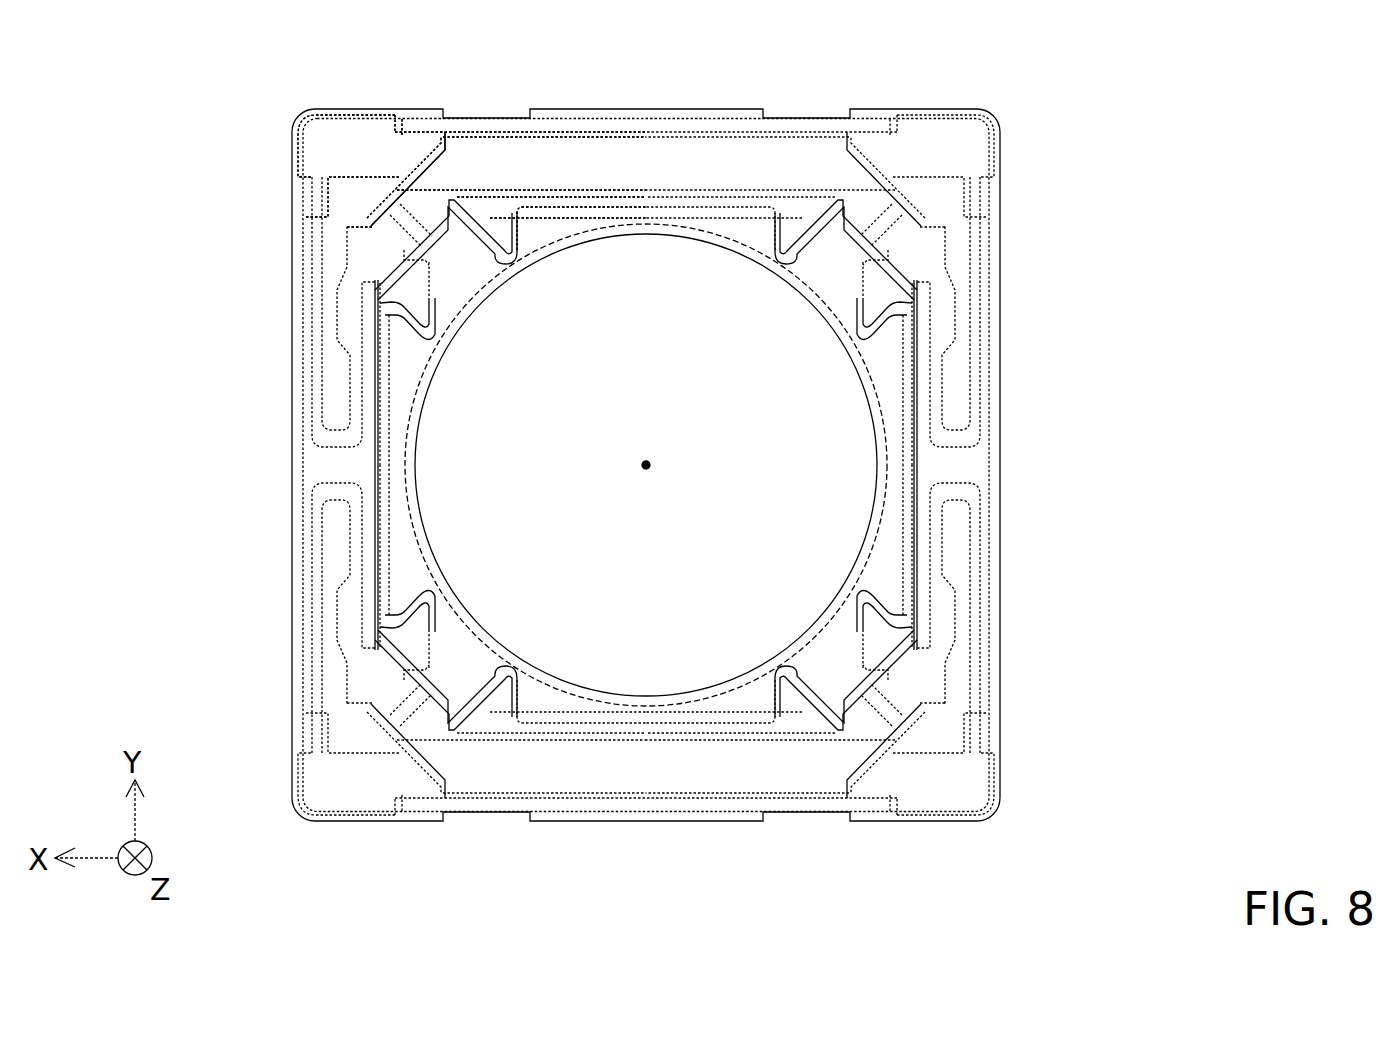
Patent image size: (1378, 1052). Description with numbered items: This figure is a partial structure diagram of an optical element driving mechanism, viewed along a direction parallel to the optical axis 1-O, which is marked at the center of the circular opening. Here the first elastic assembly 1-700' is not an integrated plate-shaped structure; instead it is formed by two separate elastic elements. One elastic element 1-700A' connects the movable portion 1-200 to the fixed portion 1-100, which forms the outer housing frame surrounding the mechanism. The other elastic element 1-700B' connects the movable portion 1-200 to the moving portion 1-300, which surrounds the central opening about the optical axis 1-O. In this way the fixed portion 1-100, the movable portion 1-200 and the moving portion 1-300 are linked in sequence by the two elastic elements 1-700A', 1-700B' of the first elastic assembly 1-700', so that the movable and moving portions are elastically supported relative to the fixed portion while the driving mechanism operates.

The fixed portion 1-100 is at (1000, 177).
The movable portion 1-200 is at (960, 465).
The moving portion 1-300 is at (890, 572).
The first elastic assembly 1-700' is at (831, 163).
The elastic element 1-700A' is at (646, 423).
The elastic element 1-700B' is at (779, 465).
The optical axis 1-O is at (673, 482).